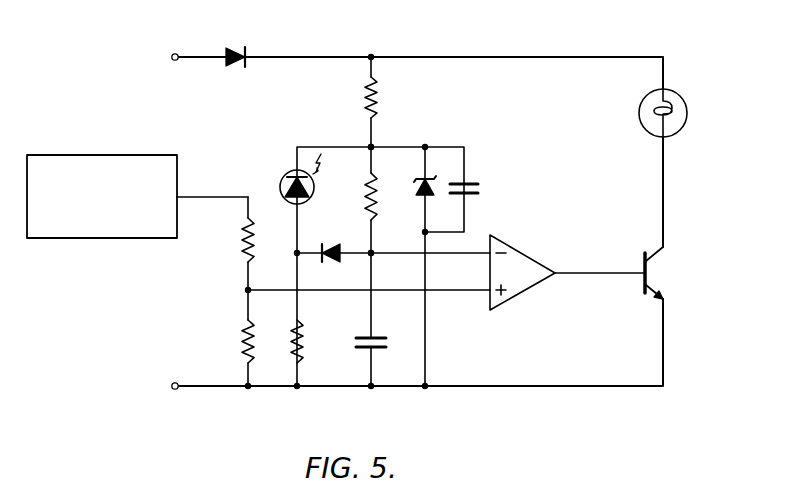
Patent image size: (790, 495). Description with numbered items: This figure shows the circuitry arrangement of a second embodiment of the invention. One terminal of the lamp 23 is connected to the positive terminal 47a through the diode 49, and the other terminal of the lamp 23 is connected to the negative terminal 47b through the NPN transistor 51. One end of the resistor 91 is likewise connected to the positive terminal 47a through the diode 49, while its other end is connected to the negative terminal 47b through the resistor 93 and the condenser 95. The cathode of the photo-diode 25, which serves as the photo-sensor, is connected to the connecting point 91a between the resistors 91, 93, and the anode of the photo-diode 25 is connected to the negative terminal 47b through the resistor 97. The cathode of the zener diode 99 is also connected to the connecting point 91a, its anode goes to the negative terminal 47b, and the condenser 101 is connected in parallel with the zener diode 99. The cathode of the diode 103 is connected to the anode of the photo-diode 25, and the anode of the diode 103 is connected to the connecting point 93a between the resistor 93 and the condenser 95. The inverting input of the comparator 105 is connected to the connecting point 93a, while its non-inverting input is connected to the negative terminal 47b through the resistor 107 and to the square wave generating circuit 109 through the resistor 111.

The positive terminal 47a is at (175, 53).
The negative terminal 47b is at (175, 390).
The diode 49 is at (236, 46).
The lamp 23 is at (640, 121).
The resistor 91 is at (380, 100).
The connecting point 91a is at (375, 143).
The photo-diode 25 is at (311, 199).
The resistor 93 is at (378, 191).
The zener diode 99 is at (417, 192).
The condenser 101 is at (483, 189).
The diode 103 is at (330, 262).
The connecting point 93a is at (374, 257).
The condenser 95 is at (390, 343).
The resistor 97 is at (304, 332).
The resistor 111 is at (243, 238).
The resistor 107 is at (242, 340).
The comparator 105 is at (531, 256).
The NPN transistor 51 is at (667, 273).
The square wave generating circuit 109 is at (68, 242).